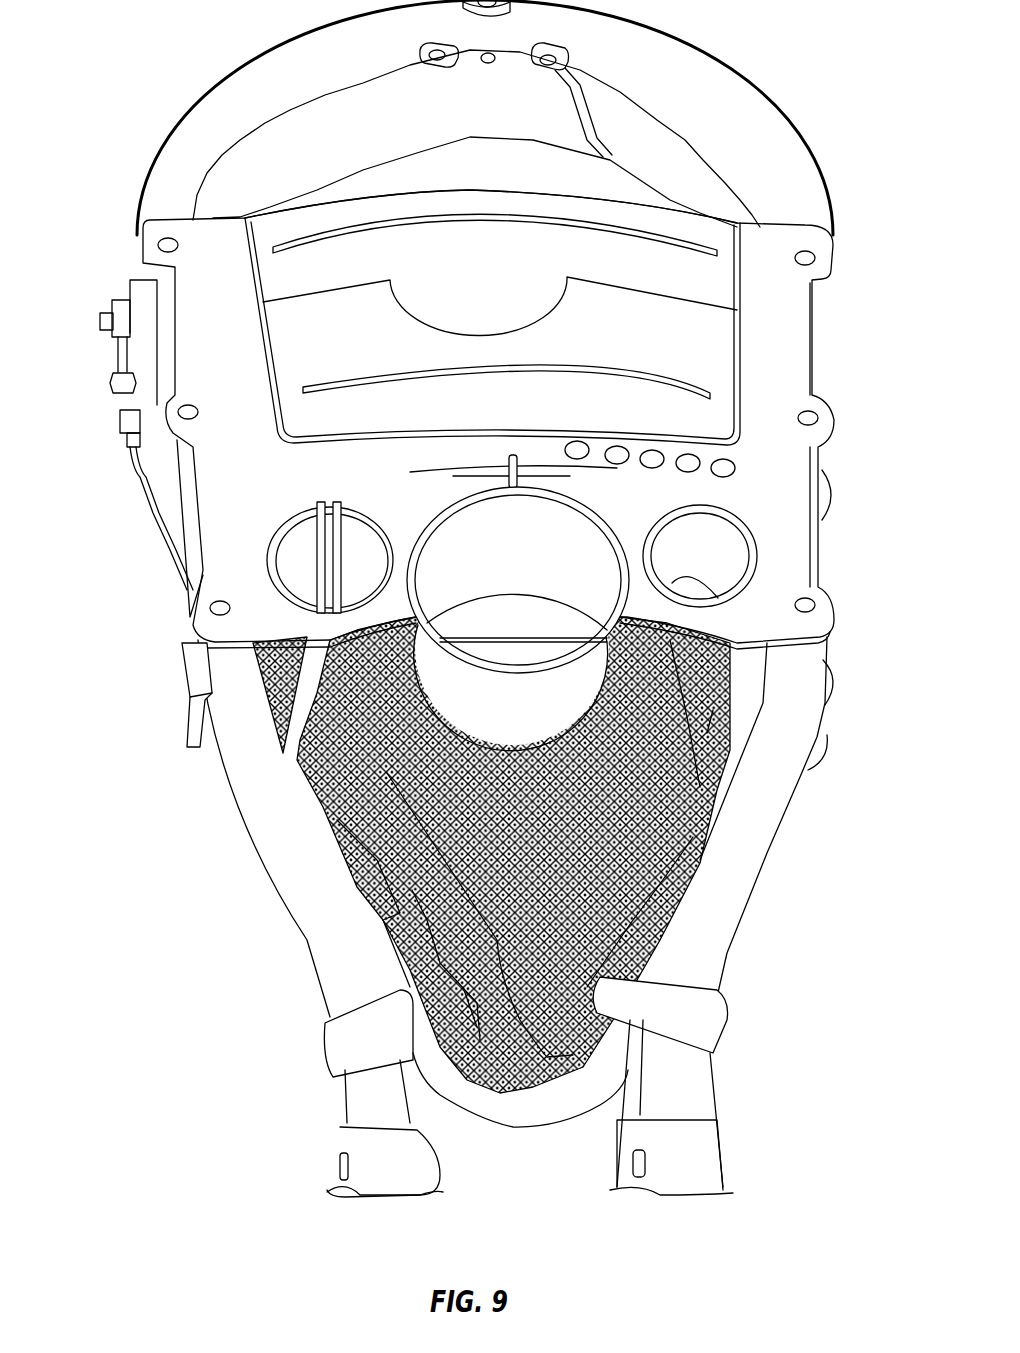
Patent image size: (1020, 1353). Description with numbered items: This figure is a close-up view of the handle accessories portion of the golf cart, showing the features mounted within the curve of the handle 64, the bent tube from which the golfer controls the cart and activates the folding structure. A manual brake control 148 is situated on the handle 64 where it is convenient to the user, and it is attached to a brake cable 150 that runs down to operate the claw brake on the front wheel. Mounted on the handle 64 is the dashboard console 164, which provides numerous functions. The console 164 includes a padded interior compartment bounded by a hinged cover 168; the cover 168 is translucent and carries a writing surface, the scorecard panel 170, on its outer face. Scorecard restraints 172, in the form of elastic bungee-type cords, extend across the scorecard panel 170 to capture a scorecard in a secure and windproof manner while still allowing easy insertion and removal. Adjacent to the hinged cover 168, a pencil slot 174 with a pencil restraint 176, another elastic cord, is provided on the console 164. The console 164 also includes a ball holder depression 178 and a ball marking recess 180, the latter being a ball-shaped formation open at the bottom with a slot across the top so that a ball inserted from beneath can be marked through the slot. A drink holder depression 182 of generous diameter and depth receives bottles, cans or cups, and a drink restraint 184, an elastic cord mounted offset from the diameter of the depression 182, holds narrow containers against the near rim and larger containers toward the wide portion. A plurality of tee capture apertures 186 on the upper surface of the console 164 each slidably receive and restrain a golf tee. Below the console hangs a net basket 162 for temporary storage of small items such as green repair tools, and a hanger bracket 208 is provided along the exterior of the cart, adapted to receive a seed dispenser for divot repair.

The handle 64 is at (831, 340).
The manual brake control 148 is at (113, 358).
The brake cable 150 is at (150, 507).
The net basket 162 is at (560, 929).
The dashboard console 164 is at (818, 540).
The hinged cover 168 is at (486, 188).
The scorecard panel 170 is at (611, 342).
The scorecard restraints 172 is at (655, 235).
The pencil slot 174 is at (447, 468).
The pencil restraint 176 is at (497, 425).
The ball holder depression 178 is at (832, 617).
The ball marking recess 180 is at (192, 606).
The drink holder depression 182 is at (300, 787).
The drink restraint 184 is at (523, 643).
The tee capture apertures 186 is at (720, 459).
The hanger brackets 208 is at (183, 683).